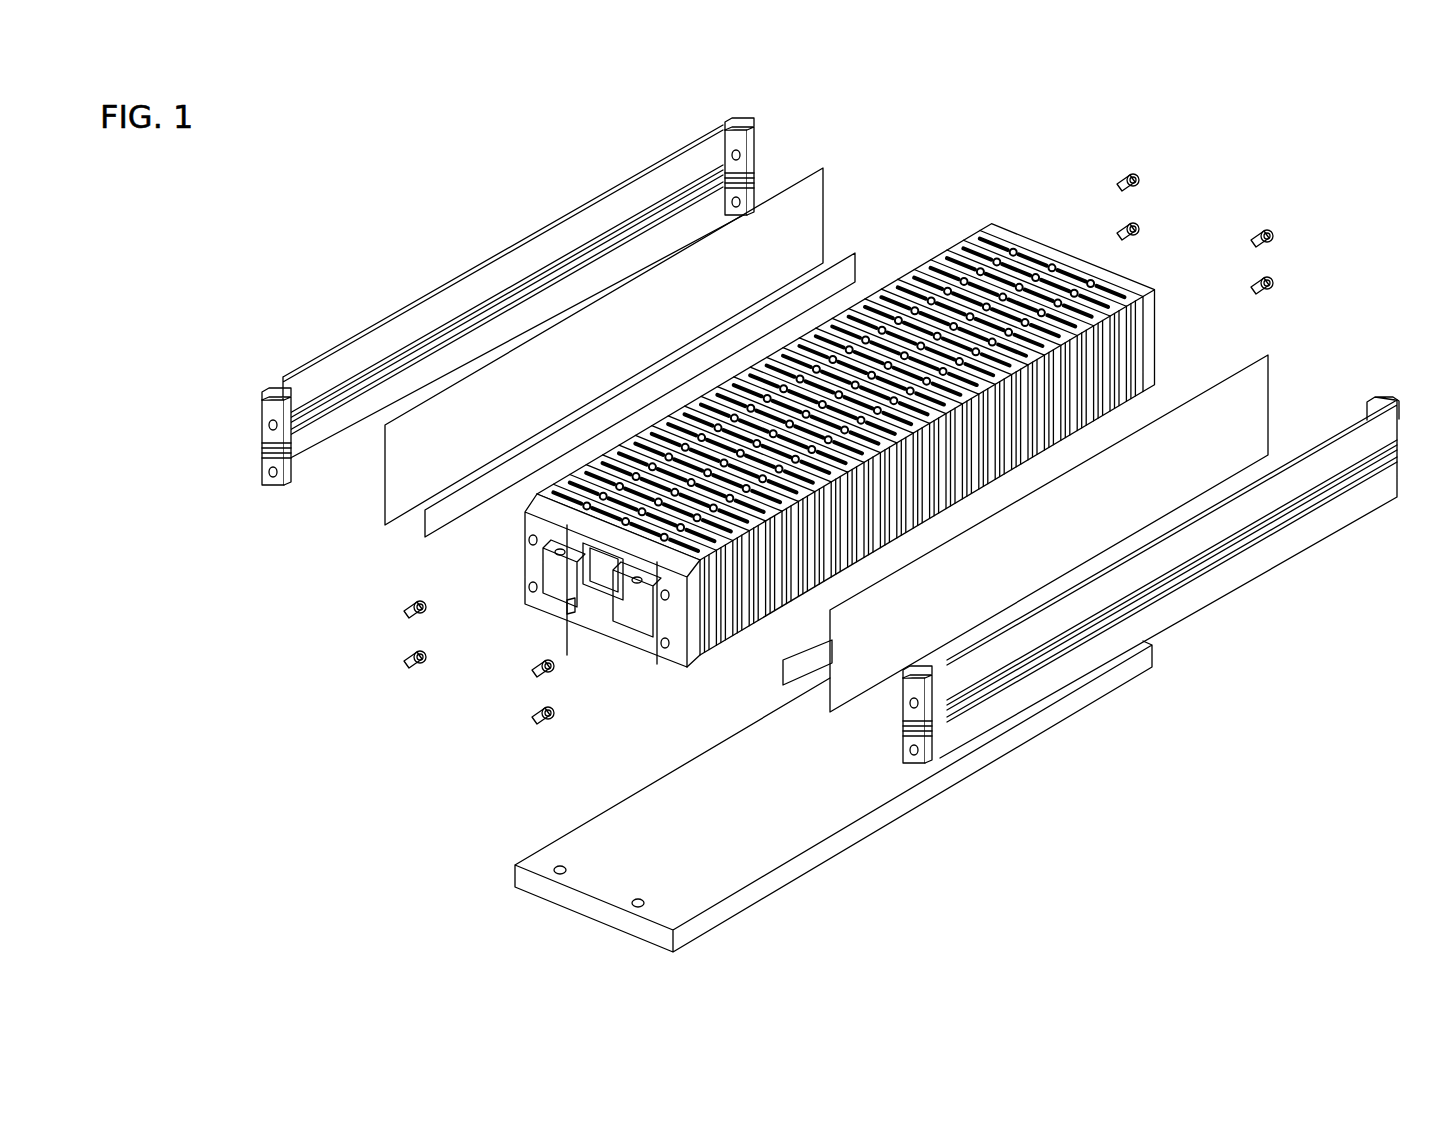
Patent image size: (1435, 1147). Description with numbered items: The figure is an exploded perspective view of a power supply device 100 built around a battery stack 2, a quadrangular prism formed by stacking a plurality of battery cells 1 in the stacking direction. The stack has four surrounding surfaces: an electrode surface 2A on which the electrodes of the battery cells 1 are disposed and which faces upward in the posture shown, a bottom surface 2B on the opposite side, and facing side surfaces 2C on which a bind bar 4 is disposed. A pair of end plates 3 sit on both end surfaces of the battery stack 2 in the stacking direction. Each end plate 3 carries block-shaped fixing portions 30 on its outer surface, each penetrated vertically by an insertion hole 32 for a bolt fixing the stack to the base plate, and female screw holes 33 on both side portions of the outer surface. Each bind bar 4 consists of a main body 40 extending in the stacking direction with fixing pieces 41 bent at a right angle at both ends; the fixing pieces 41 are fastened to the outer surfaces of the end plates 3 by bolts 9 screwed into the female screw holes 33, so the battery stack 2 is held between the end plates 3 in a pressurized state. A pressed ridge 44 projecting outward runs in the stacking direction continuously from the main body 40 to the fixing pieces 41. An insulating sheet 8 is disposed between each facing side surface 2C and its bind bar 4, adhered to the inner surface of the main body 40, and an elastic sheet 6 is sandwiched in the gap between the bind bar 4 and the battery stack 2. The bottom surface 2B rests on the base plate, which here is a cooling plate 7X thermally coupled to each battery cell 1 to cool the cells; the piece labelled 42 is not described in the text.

The power supply device 100 is at (1293, 168).
The battery cell 1 is at (740, 603).
The battery stack 2 is at (759, 488).
The electrode surface 2A is at (1005, 268).
The bottom surface 2B is at (715, 652).
The facing side surface 2C is at (932, 468).
The end plate 3 is at (822, 497).
The bind bar 4 is at (817, 497).
The elastic sheet 6 is at (455, 512).
The cooling plate 7X is at (605, 830).
The insulating sheet 8 is at (800, 237).
The bolt 9 is at (1142, 176).
The fixing portion 30 is at (557, 575).
The insertion hole 32 is at (555, 538).
The female screw hole 33 is at (667, 650).
The main body 40 is at (500, 268).
The fixing piece 41 is at (752, 163).
The bent piece 42 is at (722, 128).
The ridge 44 is at (265, 440).